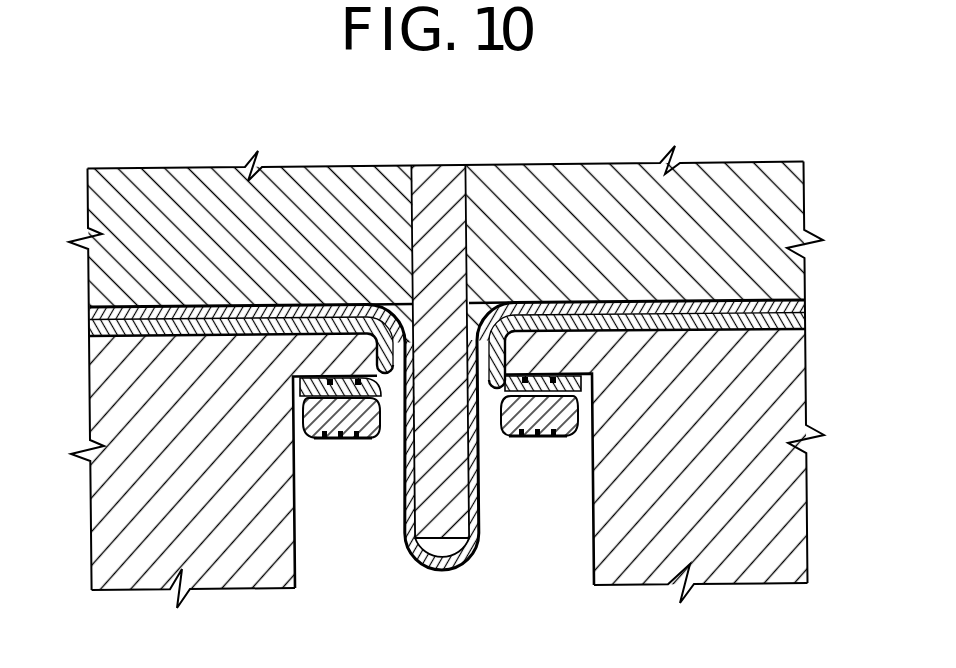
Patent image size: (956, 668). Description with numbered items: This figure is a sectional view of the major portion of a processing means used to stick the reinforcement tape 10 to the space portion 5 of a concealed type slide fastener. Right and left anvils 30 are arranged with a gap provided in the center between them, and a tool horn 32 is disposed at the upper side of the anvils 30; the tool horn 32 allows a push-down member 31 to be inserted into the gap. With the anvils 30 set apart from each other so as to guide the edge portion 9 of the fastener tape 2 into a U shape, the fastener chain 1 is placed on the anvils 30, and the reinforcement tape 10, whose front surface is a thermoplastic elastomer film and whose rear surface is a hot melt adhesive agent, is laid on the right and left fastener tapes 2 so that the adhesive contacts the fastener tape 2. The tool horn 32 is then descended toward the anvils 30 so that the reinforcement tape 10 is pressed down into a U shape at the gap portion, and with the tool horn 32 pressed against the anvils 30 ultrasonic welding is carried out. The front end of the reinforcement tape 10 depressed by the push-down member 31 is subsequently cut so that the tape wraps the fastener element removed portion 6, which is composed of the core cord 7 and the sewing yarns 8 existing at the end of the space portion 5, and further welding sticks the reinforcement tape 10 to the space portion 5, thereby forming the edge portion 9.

The fastener chain 1 is at (741, 342).
The fastener tape 2 is at (118, 331).
The space portion 5 is at (215, 306).
The fastener element removed portion 6 is at (384, 426).
The core cord 7 is at (342, 438).
The sewing yarns 8 is at (312, 437).
The edge portion 9 is at (376, 366).
The reinforcement tape 10 is at (118, 304).
The anvils 30 is at (238, 523).
The push-down member 31 is at (443, 190).
The tool horn 32 is at (333, 203).